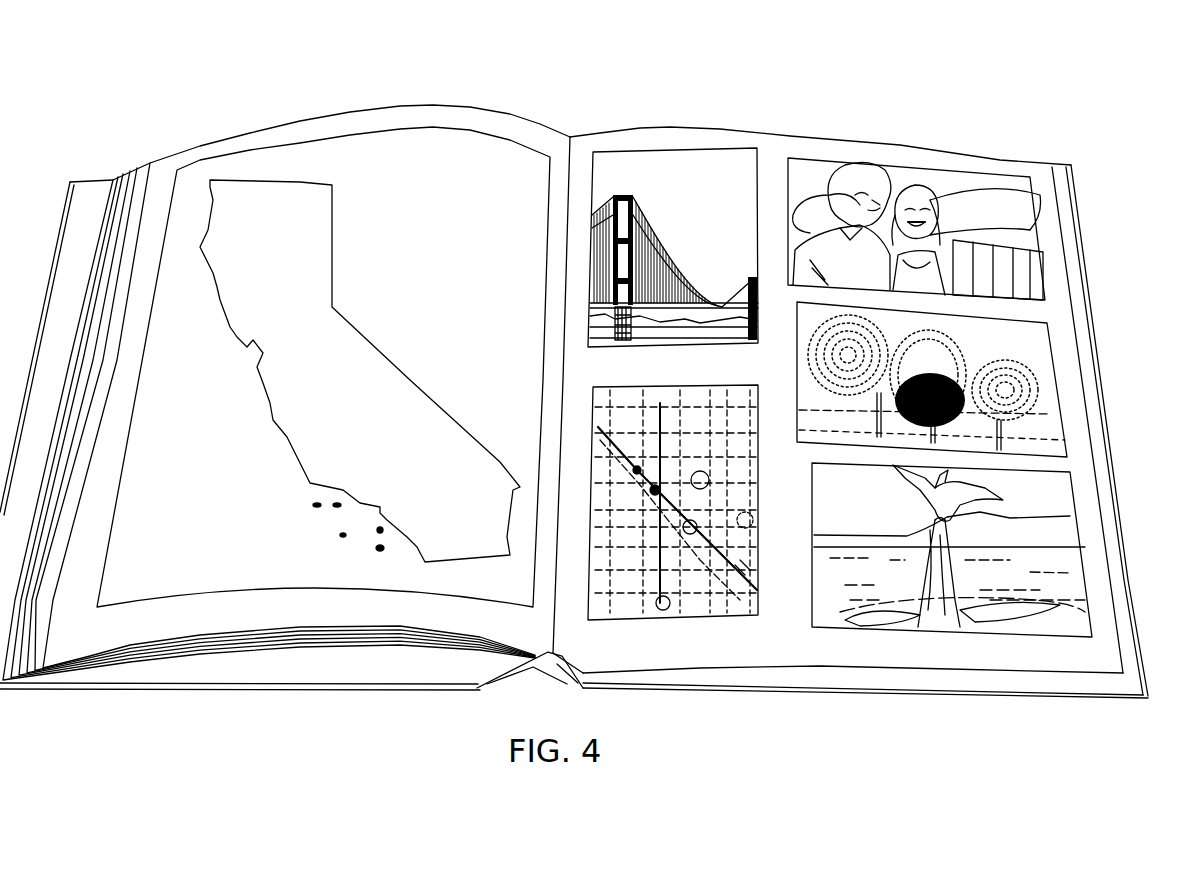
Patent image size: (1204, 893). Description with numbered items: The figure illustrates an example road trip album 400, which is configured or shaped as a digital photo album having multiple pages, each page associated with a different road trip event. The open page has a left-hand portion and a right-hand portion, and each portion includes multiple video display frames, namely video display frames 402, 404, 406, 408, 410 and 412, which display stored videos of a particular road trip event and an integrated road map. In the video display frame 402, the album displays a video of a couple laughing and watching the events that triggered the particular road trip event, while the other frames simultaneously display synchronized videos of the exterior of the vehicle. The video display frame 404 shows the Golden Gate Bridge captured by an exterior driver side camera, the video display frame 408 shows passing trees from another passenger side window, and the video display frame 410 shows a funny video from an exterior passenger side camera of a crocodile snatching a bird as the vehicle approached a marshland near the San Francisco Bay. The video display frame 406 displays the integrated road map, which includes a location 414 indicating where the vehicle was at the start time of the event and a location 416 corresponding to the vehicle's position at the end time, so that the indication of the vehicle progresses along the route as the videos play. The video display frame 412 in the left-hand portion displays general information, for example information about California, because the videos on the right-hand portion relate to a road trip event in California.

The road trip album 400 is at (118, 130).
The video display frame 402 is at (950, 178).
The video display frame 404 is at (667, 157).
The video display frame 406 is at (750, 517).
The video display frame 408 is at (1043, 370).
The video display frame 410 is at (1057, 587).
The video display frame 412 is at (288, 153).
The location 414 is at (637, 478).
The location 416 is at (740, 571).